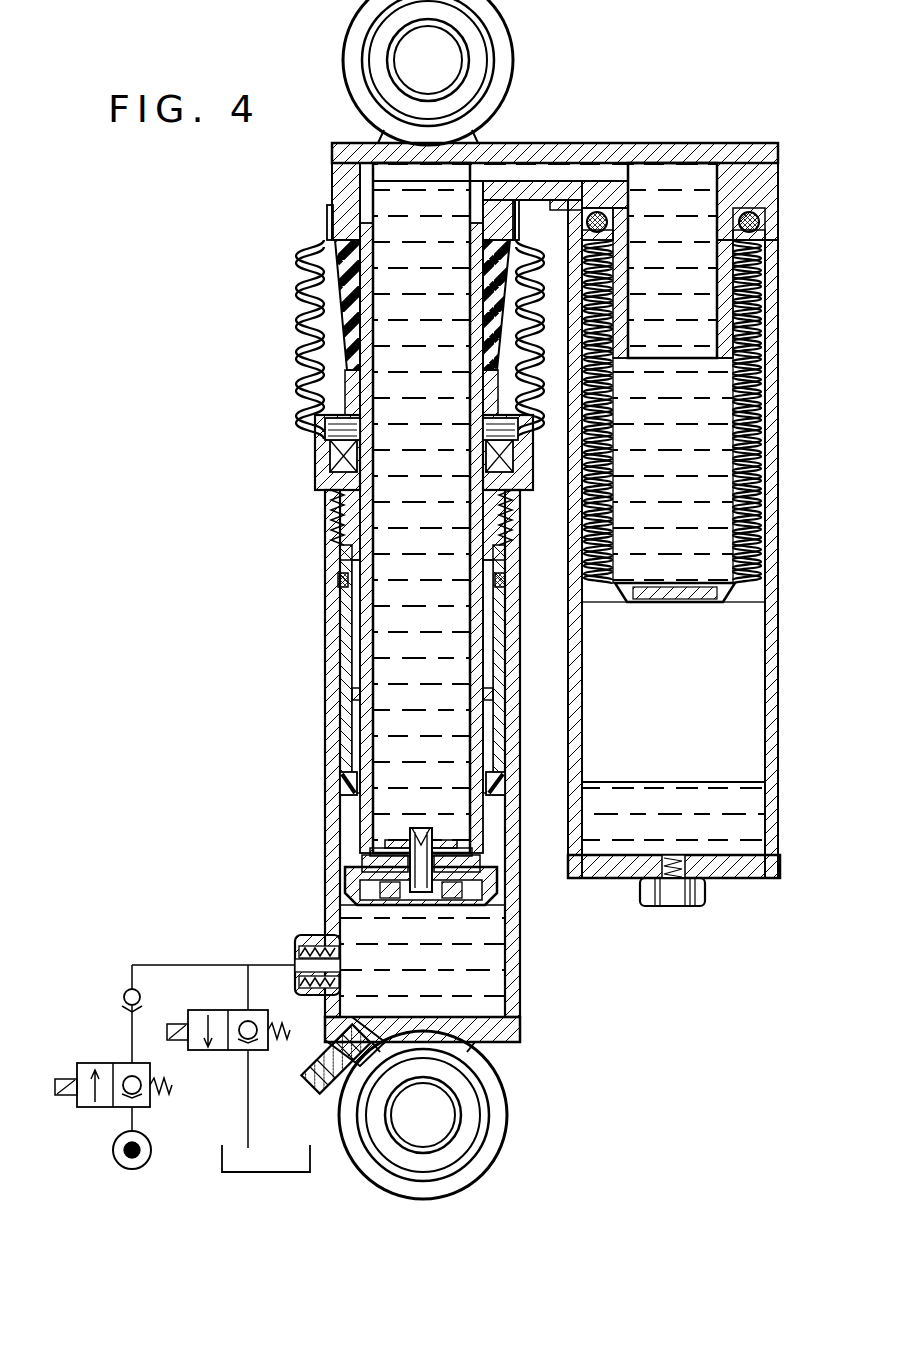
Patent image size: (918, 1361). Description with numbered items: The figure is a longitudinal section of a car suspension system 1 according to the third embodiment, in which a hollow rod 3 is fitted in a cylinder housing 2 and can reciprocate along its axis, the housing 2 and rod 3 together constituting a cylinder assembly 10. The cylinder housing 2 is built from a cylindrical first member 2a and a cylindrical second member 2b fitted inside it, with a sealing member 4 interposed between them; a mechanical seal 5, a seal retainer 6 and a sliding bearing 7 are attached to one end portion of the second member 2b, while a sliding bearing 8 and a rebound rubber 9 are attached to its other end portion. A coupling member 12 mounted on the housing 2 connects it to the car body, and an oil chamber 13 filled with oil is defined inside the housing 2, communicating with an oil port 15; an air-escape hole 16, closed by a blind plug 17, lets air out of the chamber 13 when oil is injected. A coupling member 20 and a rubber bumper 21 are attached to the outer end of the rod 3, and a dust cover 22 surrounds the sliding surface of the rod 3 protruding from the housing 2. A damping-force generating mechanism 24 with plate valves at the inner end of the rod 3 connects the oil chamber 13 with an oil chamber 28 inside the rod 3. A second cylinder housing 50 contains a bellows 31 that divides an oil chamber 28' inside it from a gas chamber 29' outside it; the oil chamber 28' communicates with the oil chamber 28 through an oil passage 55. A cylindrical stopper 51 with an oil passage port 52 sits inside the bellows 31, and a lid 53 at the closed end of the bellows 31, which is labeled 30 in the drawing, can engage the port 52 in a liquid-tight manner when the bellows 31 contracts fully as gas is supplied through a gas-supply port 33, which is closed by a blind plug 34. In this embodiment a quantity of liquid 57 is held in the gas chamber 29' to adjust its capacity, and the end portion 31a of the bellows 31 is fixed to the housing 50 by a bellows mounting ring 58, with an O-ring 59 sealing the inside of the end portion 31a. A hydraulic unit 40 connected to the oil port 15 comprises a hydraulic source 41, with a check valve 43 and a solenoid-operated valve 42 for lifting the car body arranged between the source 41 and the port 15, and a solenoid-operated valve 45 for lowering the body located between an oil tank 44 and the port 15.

The car suspension system 1 is at (632, 39).
The cylinder housing 2 is at (300, 682).
The first member 2a is at (333, 653).
The second member 2b is at (345, 620).
The hollow rod 3 is at (357, 380).
The sealing member 4 is at (342, 580).
The mechanical seal 5 is at (319, 460).
The seal retainer 6 is at (329, 430).
The sliding bearing 7 is at (338, 520).
The sliding bearing 8 is at (356, 748).
The rebound rubber 9 is at (344, 780).
The cylinder assembly 10 is at (320, 885).
The coupling member 12 is at (350, 58).
The oil chamber 13 is at (490, 973).
The oil port 15 is at (300, 963).
The air-escape hole 16 is at (331, 1025).
The blind plug 17 is at (321, 1072).
The coupling member 20 is at (504, 1120).
The rubber bumper 21 is at (345, 320).
The dust cover 22 is at (301, 270).
The damping-force generating mechanism 24 is at (385, 836).
The oil chamber 28 is at (380, 508).
The oil chamber 28' is at (716, 470).
The gas chamber 29' is at (702, 692).
The bellows end plate 30 is at (657, 572).
The bellows 31 is at (759, 490).
The end portion 31a is at (740, 207).
The gas-supply port 33 is at (686, 865).
The blind plug 34 is at (672, 897).
The hydraulic unit 40 is at (164, 958).
The hydraulic source 41 is at (113, 1154).
The solenoid-operated valve 42 is at (100, 1062).
The check valve 43 is at (126, 991).
The oil tank 44 is at (311, 1150).
The solenoid-operated valve 45 is at (258, 1050).
The second cylinder housing 50 is at (778, 602).
The cylindrical stopper 51 is at (727, 312).
The oil passage port 52 is at (678, 358).
The lid 53 is at (701, 600).
The oil passage 55 is at (564, 190).
The liquid 57 is at (749, 816).
The bellows mounting ring 58 is at (765, 233).
The O-ring 59 is at (755, 214).